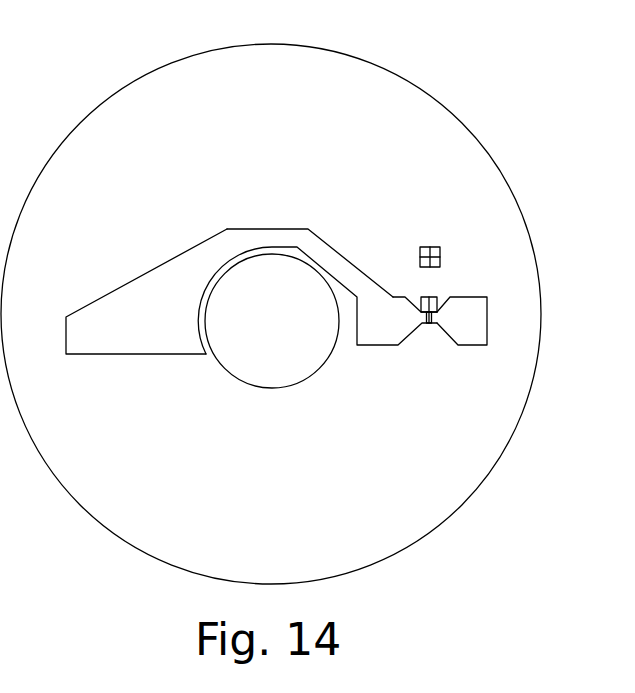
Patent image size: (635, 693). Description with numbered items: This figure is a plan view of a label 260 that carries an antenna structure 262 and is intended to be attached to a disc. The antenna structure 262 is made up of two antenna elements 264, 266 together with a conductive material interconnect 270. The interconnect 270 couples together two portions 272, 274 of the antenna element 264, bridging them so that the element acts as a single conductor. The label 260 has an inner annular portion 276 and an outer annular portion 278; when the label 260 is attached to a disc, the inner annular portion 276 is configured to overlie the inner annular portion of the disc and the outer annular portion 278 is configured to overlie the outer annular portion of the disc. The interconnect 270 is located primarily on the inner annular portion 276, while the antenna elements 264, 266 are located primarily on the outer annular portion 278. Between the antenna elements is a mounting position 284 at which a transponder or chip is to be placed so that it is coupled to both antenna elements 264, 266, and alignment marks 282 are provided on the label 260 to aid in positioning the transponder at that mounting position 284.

The label 260 is at (430, 95).
The antenna structure 262 is at (383, 208).
The antenna element 264 is at (322, 231).
The antenna element 266 is at (478, 320).
The conductive material interconnect 270 is at (265, 238).
The portion of antenna element 272 is at (137, 317).
The portion of antenna element 274 is at (385, 325).
The inner annular portion 276 is at (222, 382).
The outer annular portion 278 is at (303, 100).
The alignment marks 282 is at (463, 248).
The mounting position 284 is at (436, 339).